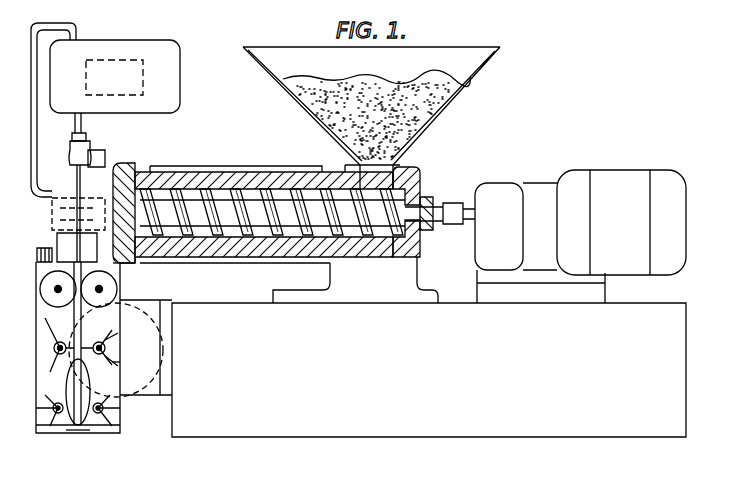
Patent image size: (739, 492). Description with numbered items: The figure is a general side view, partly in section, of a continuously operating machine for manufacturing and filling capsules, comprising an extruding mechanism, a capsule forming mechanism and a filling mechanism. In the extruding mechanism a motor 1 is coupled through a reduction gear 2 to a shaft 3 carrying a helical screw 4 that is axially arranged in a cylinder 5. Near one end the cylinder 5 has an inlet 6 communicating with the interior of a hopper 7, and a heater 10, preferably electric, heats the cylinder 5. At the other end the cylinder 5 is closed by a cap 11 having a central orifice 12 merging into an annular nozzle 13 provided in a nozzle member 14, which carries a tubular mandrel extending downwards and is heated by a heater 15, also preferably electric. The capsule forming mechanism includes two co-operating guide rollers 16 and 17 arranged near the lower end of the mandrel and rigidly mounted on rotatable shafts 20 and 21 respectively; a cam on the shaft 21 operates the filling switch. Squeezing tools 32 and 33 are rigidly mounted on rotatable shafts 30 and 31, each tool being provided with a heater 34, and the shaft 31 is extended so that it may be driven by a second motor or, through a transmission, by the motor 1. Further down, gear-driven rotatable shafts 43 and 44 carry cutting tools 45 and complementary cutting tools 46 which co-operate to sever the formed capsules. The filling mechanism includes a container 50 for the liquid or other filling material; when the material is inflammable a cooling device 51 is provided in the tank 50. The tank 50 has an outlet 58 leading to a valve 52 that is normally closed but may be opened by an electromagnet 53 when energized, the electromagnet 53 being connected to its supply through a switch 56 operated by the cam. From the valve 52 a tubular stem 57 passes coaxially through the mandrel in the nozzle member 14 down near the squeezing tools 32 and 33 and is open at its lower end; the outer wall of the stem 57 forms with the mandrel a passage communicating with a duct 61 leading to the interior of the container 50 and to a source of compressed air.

The motor 1 is at (620, 206).
The reduction gear 2 is at (492, 211).
The shaft 3 is at (456, 204).
The helical screw 4 is at (255, 171).
The cylinder 5 is at (288, 192).
The inlet 6 is at (399, 166).
The hopper 7 is at (485, 77).
The heater 10 is at (186, 171).
The cap 11 is at (141, 166).
The central orifice 12 is at (176, 169).
The annular nozzle 13 is at (52, 210).
The nozzle member 14 is at (70, 233).
The heater 15 is at (124, 266).
The guide roller 16 is at (172, 301).
The guide roller 17 is at (82, 312).
The rotatable shaft 20 is at (108, 290).
The rotatable shaft 21 is at (58, 289).
The rotatable shaft 30 is at (105, 349).
The rotatable shaft 31 is at (100, 354).
The squeezing tool 32 is at (118, 333).
The squeezing tool 33 is at (58, 344).
The heater 34 is at (120, 362).
The rotatable shaft 43 is at (103, 408).
The rotatable shaft 44 is at (66, 428).
The cutting tool 45 is at (88, 425).
The complementary cutting tool 46 is at (86, 431).
The container 50 is at (170, 63).
The cooling device 51 is at (112, 70).
The valve 52 is at (95, 150).
The electromagnet 53 is at (82, 153).
The switch 56 is at (57, 248).
The tubular stem 57 is at (64, 190).
The outlet 58 is at (86, 126).
The duct 61 is at (31, 90).